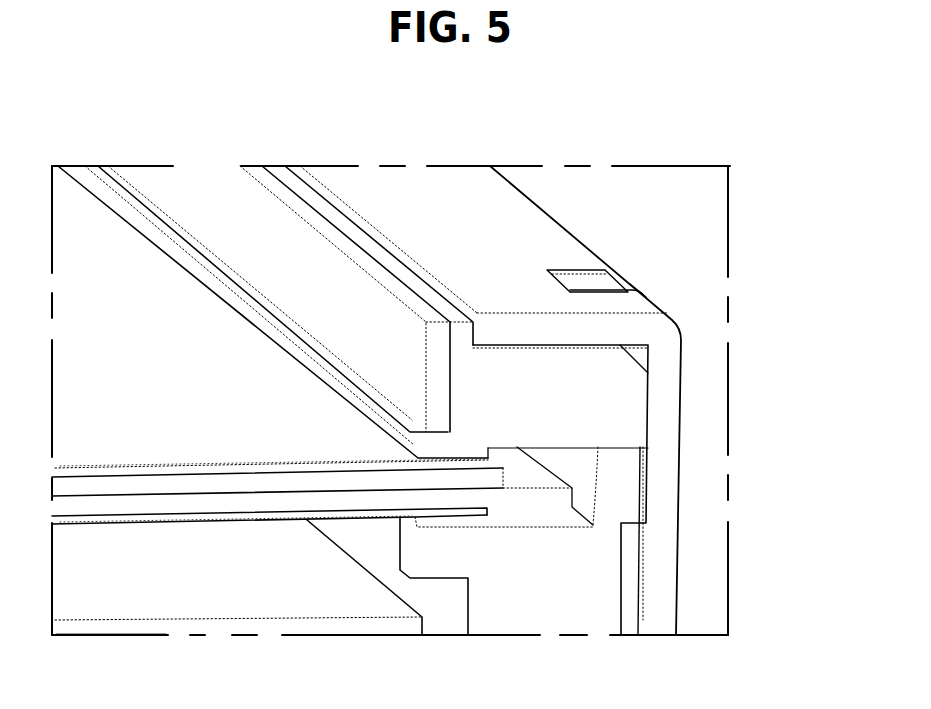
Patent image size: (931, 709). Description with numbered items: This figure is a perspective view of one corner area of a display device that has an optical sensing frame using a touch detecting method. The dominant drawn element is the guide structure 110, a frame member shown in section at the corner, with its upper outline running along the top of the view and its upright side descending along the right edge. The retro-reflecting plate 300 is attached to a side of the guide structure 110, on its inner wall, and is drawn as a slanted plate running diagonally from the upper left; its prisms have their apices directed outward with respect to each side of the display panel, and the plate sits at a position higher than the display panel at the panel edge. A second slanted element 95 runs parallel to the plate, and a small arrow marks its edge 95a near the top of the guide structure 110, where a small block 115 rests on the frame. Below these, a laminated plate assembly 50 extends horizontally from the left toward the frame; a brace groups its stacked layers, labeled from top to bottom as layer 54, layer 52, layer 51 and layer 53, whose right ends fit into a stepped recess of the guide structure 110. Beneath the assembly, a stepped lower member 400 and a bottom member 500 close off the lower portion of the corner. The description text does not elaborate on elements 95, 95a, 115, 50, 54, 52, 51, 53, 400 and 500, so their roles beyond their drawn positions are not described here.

The retro-reflecting plate 300 is at (200, 185).
The cover panel 95 is at (449, 183).
The edge of cover panel 95a is at (632, 276).
The block 115 is at (577, 282).
The guide structure 110 is at (613, 397).
The plate assembly 50 is at (790, 462).
The first layer 54 is at (488, 466).
The second layer 52 is at (490, 481).
The third layer 51 is at (502, 498).
The fourth layer 53 is at (437, 513).
The lower member 400 is at (532, 598).
The bottom member 500 is at (207, 592).